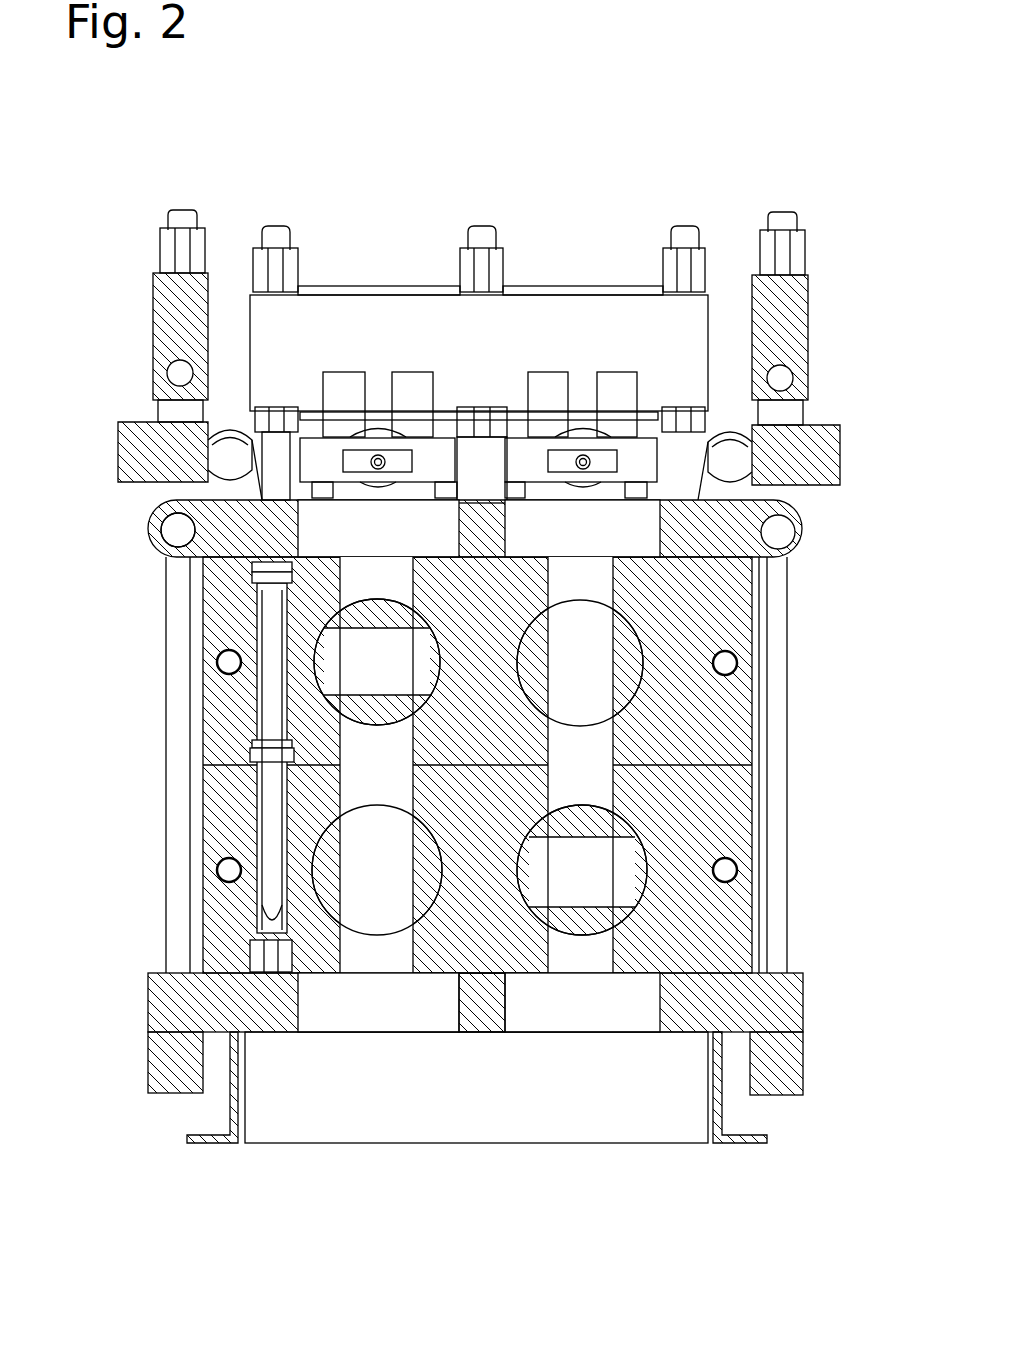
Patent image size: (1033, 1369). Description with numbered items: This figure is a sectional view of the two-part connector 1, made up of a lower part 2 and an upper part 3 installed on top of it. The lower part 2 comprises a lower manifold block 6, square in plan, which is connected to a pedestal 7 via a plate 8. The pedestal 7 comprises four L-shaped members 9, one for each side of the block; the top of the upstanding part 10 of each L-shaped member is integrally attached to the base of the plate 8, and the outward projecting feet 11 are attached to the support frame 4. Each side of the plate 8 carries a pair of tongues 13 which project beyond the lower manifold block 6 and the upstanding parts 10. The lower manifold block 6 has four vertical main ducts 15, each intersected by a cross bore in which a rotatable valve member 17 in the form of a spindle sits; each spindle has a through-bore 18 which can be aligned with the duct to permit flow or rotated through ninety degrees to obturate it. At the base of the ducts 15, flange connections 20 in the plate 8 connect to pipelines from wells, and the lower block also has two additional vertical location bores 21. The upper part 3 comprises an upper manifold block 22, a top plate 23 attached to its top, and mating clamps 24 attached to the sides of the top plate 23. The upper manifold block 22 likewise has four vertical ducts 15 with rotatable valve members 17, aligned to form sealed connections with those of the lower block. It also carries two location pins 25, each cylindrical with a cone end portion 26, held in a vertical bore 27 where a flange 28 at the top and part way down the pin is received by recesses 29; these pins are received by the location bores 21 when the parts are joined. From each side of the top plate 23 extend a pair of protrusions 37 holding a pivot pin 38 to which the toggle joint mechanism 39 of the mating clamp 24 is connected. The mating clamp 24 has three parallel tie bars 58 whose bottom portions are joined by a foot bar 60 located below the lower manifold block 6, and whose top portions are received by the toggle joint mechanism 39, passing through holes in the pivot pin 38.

The connector 1 is at (833, 148).
The lower part 2 is at (808, 925).
The upper part 3 is at (808, 608).
The support frame 4 is at (80, 662).
The lower manifold block 6 is at (760, 898).
The pedestal 7 is at (805, 1133).
The plate 8 is at (473, 1023).
The L-shaped members 9 is at (175, 1223).
The upstanding part 10 is at (225, 1106).
The outward projecting feet 11 is at (215, 1150).
The tongues 13 is at (808, 1010).
The main ducts 15 is at (590, 785).
The rotatable valve member 17 is at (318, 857).
The through-bore 18 is at (345, 660).
The flange connections 20 is at (607, 1020).
The location bores 21 is at (245, 930).
The upper manifold block 22 is at (760, 706).
The top plate 23 is at (278, 480).
The mating clamp 24 is at (835, 385).
The location pins 25 is at (258, 905).
The cone end portion 26 is at (283, 1035).
The vertical bore 27 is at (246, 700).
The flange 28 is at (250, 578).
The recesses 29 is at (250, 568).
The protrusions 37 is at (150, 527).
The pivot pin 38 is at (245, 516).
The toggle joint mechanism 39 is at (125, 382).
The tie bars 58 is at (790, 765).
The foot bar 60 is at (806, 1068).